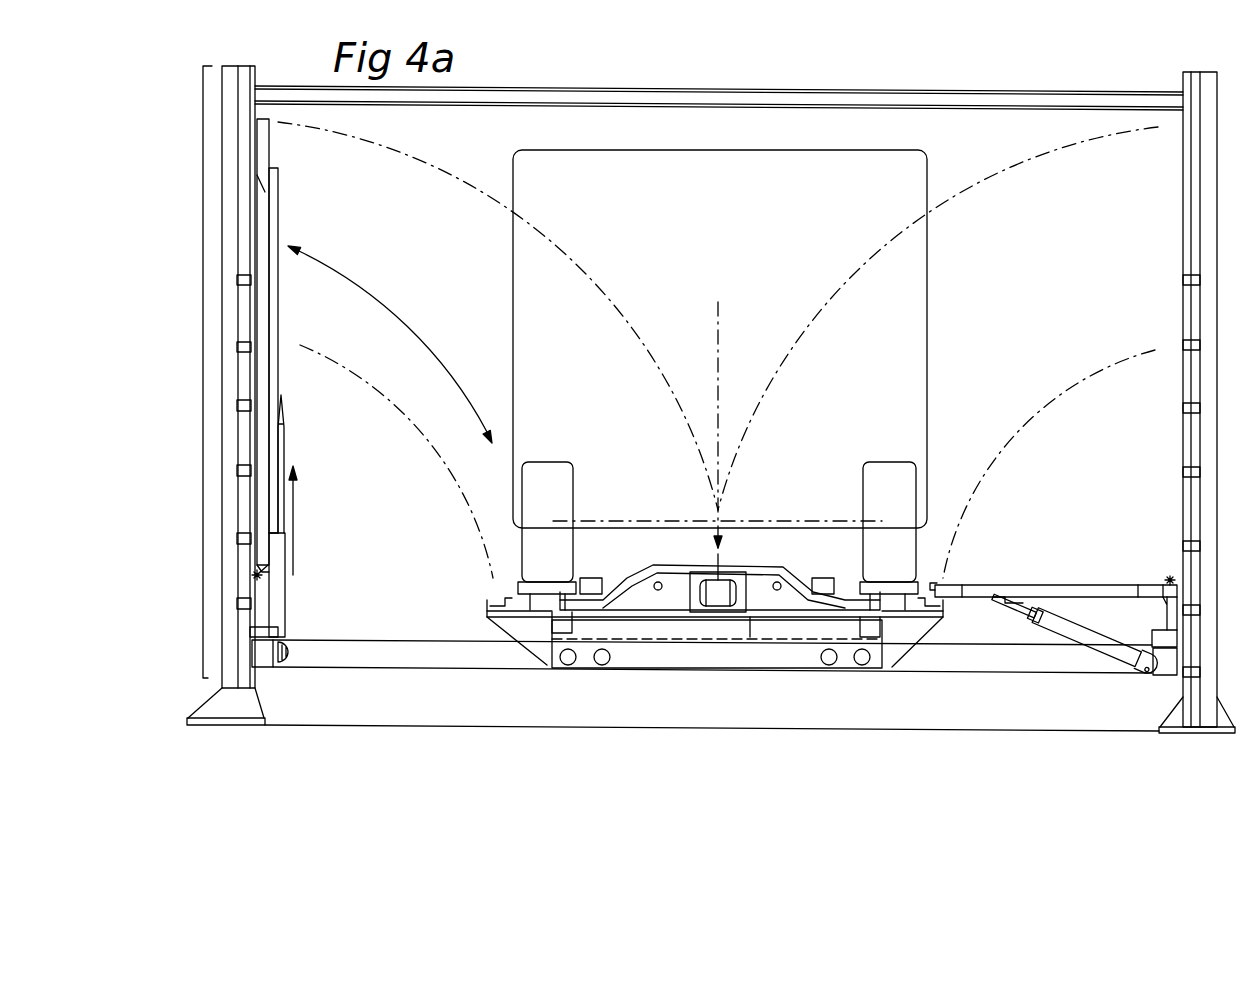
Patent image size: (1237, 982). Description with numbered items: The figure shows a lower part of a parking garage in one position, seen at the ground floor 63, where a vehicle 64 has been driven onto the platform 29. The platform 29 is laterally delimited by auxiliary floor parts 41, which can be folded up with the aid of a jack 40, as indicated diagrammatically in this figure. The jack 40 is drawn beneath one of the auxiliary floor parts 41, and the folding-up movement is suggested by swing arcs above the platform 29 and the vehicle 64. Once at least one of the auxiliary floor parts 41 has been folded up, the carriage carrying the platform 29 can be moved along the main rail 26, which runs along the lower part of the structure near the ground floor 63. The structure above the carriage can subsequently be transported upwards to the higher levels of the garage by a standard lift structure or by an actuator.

The ground floor 63 is at (203, 385).
The vehicle 64 is at (769, 247).
The platform 29 is at (628, 555).
The main rail 26 is at (975, 658).
The auxiliary floor parts 41 is at (1003, 590).
The jack 40 is at (1083, 632).